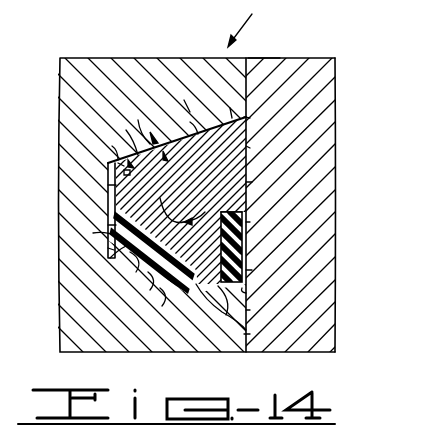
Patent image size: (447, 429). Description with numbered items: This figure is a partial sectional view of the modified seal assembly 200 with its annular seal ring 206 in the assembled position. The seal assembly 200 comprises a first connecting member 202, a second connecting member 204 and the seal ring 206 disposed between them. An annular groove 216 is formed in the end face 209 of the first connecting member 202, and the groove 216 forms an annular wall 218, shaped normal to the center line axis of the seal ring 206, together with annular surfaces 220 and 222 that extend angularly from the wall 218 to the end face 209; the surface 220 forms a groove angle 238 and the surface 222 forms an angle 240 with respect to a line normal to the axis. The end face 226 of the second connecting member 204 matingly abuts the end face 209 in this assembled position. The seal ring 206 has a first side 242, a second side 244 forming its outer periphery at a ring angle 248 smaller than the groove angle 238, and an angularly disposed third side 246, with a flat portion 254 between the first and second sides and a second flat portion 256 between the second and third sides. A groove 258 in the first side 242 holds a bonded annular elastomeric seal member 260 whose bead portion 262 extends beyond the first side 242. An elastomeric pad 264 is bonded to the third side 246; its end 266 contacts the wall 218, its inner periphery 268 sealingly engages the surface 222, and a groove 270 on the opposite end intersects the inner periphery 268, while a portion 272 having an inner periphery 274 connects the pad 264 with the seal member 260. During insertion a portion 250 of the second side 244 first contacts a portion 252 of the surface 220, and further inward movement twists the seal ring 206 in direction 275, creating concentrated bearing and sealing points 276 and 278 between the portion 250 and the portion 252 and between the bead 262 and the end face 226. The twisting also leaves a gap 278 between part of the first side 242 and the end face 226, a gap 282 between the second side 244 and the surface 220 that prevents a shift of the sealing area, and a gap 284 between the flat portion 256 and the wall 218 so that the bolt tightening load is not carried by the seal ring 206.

The seal assembly 200 is at (258, 24).
The first connecting member 202 is at (68, 58).
The second connecting member 204 is at (322, 86).
The annular seal ring 206 is at (138, 120).
The end face 209 is at (263, 58).
The annular groove 216 is at (112, 205).
The annular wall 218 is at (134, 254).
The annular surface 220 is at (230, 108).
The annular surface 222 is at (204, 290).
The end face 226 is at (246, 291).
The groove angle 238 is at (124, 172).
The angle 240 is at (112, 258).
The first side 242 is at (252, 182).
The second side 244 is at (190, 122).
The third side 246 is at (150, 290).
The ring angle 248 is at (150, 181).
The portion of second side 250 is at (118, 163).
The portion of surface 252 is at (126, 130).
The flat portion 254 is at (250, 118).
The second flat portion 256 is at (112, 186).
The groove 258 is at (232, 201).
The annular elastomeric seal member 260 is at (250, 242).
The bead portion 262 is at (252, 270).
The elastomeric pad 264 is at (136, 272).
The end of elastomeric pad 266 is at (110, 248).
The inner periphery 268 is at (162, 306).
The groove 270 is at (226, 315).
The portion 272 is at (250, 310).
The inner periphery 274 is at (250, 334).
The direction 275 is at (182, 203).
The bearing and sealing point 276 is at (112, 146).
The bearing and sealing point 278 is at (250, 148).
The gap 282 is at (184, 100).
The gap 284 is at (110, 225).